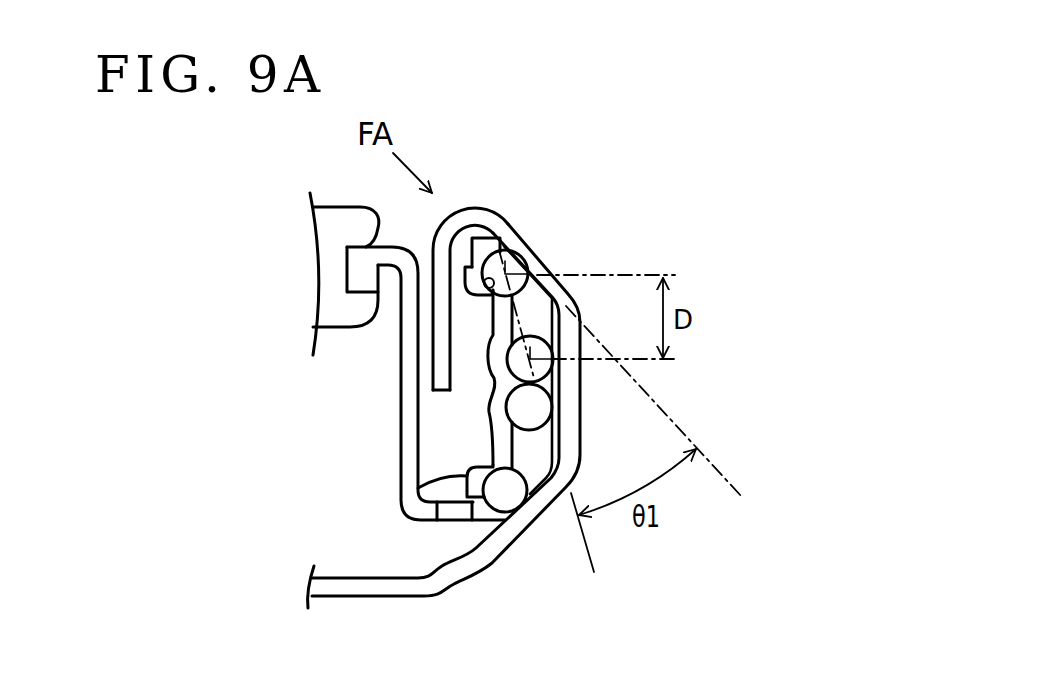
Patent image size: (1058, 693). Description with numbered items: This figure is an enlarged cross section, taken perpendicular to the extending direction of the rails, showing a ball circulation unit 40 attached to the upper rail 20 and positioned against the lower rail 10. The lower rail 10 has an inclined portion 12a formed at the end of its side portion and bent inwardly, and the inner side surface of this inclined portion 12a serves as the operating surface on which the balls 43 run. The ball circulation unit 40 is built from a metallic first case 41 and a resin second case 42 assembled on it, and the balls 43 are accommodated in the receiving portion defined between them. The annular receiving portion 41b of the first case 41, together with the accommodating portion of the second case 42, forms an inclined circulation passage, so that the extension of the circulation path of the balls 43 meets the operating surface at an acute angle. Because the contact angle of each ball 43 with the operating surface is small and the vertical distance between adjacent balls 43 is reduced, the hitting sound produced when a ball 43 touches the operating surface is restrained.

The lower rail 10 is at (477, 571).
The inclined portion 12a is at (507, 217).
The upper rail 20 is at (411, 515).
The ball circulation unit 40 is at (490, 437).
The first case 41 is at (418, 488).
The annular receiving portion 41b is at (493, 298).
The second case 42 is at (541, 449).
The ball 43 is at (511, 260).